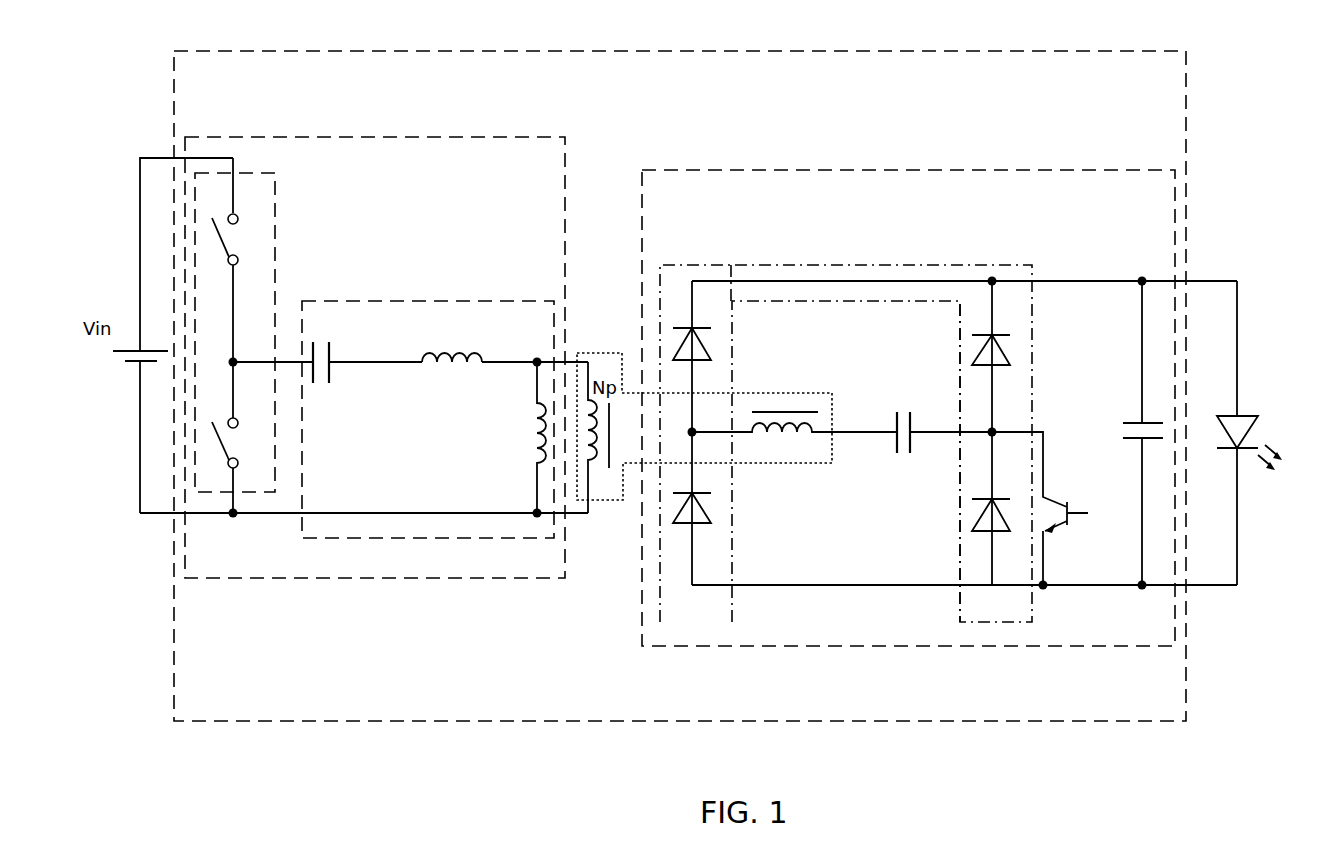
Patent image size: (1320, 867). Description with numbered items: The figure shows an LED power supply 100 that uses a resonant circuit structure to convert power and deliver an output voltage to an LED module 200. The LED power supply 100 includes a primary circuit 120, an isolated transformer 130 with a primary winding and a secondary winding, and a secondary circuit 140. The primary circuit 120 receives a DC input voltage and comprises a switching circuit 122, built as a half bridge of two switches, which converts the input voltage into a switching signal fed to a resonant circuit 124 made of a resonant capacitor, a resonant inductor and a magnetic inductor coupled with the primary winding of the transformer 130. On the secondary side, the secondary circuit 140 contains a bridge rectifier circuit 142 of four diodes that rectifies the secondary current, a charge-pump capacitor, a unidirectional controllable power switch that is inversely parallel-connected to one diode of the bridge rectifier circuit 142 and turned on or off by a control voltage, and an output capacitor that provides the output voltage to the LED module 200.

The LED power supply 100 is at (308, 721).
The primary circuit 120 is at (413, 138).
The switching circuit 122 is at (275, 229).
The resonant circuit 124 is at (488, 300).
The isolated transformer 130 is at (807, 392).
The secondary circuit 140 is at (948, 169).
The bridge rectifier circuit 142 is at (770, 265).
The LED module 200 is at (1238, 415).